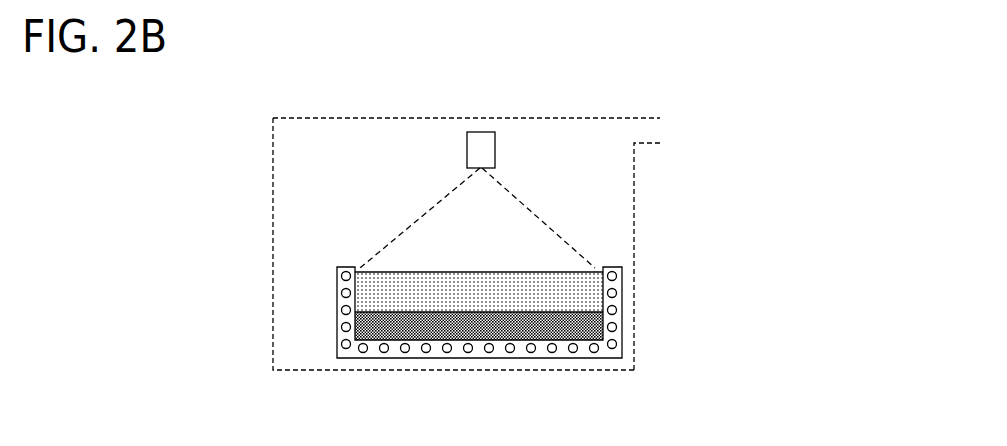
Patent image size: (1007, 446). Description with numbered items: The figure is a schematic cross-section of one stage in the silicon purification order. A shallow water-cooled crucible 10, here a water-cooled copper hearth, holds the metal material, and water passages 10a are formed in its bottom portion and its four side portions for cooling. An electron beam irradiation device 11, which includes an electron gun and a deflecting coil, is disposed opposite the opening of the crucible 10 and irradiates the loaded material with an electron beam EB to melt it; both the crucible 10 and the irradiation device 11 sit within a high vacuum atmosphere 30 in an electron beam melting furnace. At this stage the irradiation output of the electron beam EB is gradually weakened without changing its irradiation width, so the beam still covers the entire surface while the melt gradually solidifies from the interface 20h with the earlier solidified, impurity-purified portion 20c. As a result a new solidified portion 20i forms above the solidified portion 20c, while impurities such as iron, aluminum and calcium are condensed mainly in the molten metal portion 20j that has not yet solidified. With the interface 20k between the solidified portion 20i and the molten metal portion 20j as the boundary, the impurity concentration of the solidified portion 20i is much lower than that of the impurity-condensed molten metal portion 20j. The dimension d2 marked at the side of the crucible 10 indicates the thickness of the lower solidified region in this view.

The electron beam irradiation device 11 is at (495, 150).
The electron beam EB is at (540, 218).
The high vacuum atmosphere 30 is at (622, 193).
The water-cooled crucible 10 is at (622, 305).
The water passages 10a is at (385, 352).
The molten metal portion 20j is at (572, 280).
The solidified portion 20c is at (595, 330).
The interface 20h is at (460, 330).
The solidified portion 20i is at (524, 318).
The interface 20k is at (566, 312).
The layer thickness d2 is at (357, 339).